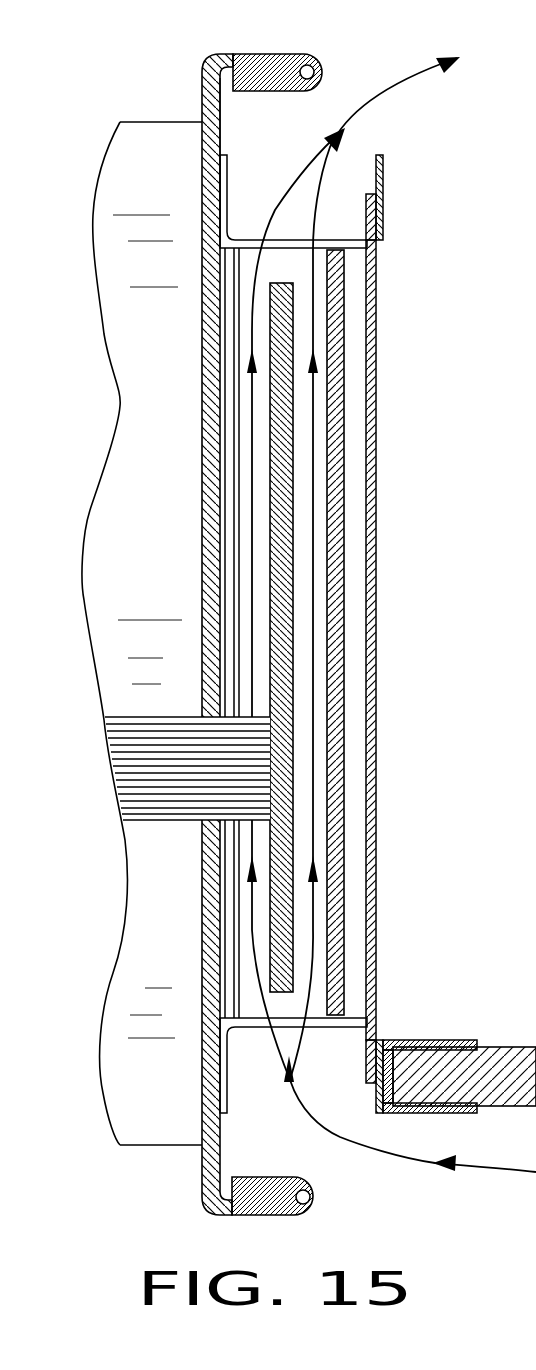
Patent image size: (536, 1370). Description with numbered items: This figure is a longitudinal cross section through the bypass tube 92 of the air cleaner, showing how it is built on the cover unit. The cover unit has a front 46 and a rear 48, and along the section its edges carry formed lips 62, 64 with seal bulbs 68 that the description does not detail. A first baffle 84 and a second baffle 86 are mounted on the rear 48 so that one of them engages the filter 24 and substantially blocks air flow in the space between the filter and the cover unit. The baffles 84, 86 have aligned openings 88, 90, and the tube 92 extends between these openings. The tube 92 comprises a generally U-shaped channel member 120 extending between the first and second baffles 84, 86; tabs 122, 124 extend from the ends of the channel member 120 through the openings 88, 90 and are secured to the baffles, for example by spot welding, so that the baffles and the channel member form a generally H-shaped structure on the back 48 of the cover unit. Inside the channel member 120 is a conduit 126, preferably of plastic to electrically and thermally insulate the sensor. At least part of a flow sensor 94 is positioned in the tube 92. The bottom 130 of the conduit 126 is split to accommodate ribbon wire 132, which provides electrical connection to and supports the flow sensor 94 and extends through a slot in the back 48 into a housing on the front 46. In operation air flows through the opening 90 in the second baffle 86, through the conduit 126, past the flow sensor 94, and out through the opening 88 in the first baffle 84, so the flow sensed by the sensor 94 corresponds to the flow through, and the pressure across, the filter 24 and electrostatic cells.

The filter 24 is at (448, 1038).
The front of the cover unit 46 is at (200, 100).
The rear of the cover unit 48 is at (220, 120).
The upper lip 62 is at (233, 63).
The lower lip 64 is at (222, 1203).
The bulb seal 68 is at (320, 62).
The first baffle 84 is at (383, 167).
The second baffle 86 is at (380, 1038).
The opening 88 is at (348, 250).
The opening 90 is at (350, 1015).
The bypass tube 92 is at (499, 294).
The flow sensor 94 is at (294, 520).
The channel member 120 is at (378, 393).
The tab 122 is at (379, 203).
The tab 124 is at (368, 1072).
The conduit 126 is at (344, 455).
The bottom of the conduit 130 is at (233, 463).
The ribbon wire 132 is at (165, 805).